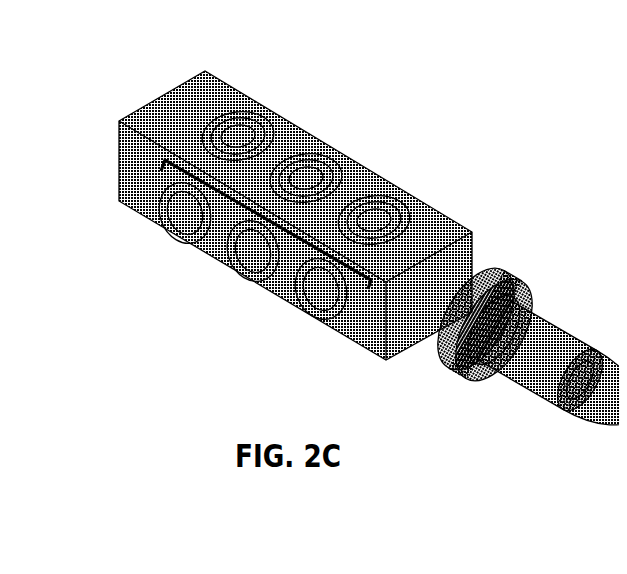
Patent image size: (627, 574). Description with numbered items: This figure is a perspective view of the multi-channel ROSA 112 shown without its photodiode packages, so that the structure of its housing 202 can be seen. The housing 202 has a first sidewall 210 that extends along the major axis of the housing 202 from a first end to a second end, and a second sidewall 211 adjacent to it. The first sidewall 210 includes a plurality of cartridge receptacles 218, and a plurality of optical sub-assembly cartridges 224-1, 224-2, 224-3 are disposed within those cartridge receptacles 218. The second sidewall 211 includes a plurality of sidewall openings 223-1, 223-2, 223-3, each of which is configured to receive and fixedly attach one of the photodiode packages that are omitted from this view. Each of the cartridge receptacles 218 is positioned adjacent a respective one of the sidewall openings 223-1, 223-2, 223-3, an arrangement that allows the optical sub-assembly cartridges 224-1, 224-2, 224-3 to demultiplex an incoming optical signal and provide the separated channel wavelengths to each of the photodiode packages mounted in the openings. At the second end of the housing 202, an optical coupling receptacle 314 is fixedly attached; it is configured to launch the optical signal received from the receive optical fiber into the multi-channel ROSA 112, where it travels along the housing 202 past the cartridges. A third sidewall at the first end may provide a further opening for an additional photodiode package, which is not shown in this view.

The multi-channel ROSA 112 is at (329, 249).
The housing 202 is at (277, 222).
The first sidewall 210 is at (112, 191).
The second sidewall 211 is at (422, 212).
The cartridge receptacles 218 is at (362, 276).
The sidewall opening 223-1 is at (363, 185).
The sidewall opening 223-2 is at (309, 148).
The sidewall opening 223-3 is at (256, 115).
The optical sub-assembly cartridge 224-1 is at (307, 295).
The optical sub-assembly cartridge 224-2 is at (235, 255).
The optical sub-assembly cartridge 224-3 is at (167, 215).
The optical coupling receptacle 314 is at (510, 378).